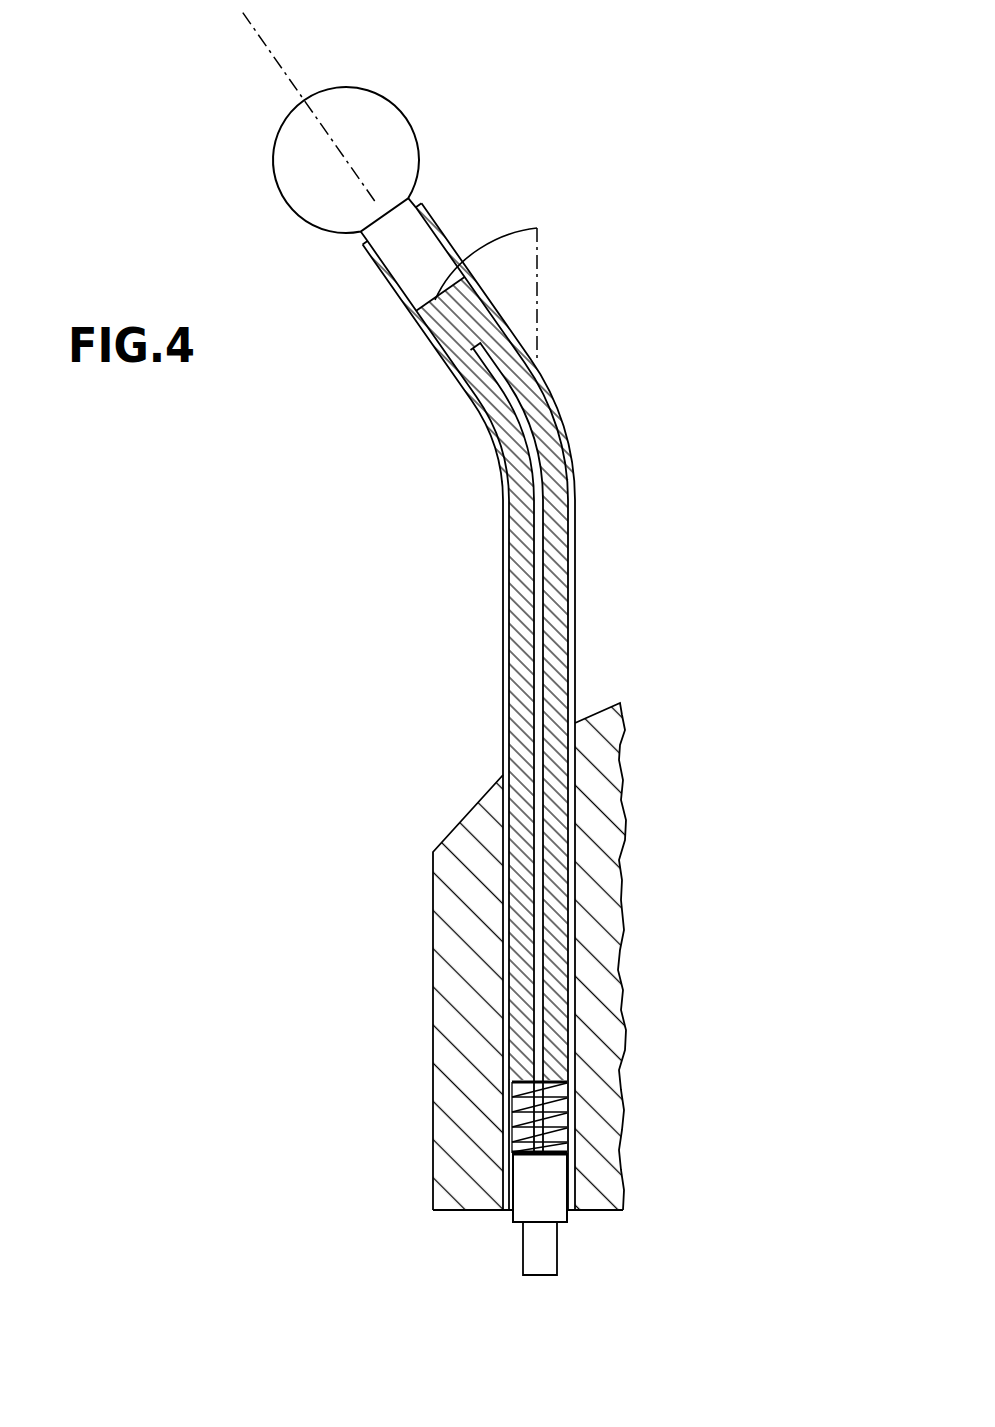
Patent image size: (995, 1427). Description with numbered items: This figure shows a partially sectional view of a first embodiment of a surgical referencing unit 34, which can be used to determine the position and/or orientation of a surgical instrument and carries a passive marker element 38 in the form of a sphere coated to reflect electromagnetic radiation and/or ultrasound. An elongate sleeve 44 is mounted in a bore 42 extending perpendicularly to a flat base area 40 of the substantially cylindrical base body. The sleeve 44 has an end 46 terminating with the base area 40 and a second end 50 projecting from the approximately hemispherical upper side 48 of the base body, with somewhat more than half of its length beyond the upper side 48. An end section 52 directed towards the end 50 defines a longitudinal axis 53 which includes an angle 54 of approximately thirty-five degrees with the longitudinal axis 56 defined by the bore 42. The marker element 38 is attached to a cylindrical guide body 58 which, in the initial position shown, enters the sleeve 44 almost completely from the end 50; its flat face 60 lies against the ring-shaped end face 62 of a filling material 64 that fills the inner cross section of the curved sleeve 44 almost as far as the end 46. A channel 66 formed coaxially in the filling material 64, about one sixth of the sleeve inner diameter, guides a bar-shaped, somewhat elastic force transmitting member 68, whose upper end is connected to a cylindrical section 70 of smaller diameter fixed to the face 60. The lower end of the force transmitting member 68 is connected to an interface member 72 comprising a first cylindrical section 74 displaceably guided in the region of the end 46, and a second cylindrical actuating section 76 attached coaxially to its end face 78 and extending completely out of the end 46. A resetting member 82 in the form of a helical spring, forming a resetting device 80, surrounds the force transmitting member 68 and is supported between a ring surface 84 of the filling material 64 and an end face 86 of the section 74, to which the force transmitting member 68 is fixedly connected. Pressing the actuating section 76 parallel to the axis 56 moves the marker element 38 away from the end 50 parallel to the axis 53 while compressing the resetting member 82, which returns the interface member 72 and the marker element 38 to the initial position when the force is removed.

The referencing unit 34 is at (392, 759).
The marker element 38 is at (362, 117).
The base area 40 is at (597, 1213).
The bore 42 is at (557, 857).
The sleeve 44 is at (568, 595).
The end 46 is at (508, 1216).
The upper side 48 is at (597, 708).
The second end 50 is at (413, 201).
The end section 52 is at (407, 297).
The longitudinal axis 53 is at (282, 43).
The angle 54 is at (497, 237).
The longitudinal axis 56 is at (543, 271).
The guide body 58 is at (402, 247).
The flat face 60 is at (428, 335).
The end face 62 is at (452, 263).
The filling material 64 is at (547, 443).
The channel 66 is at (538, 497).
The force transmitting member 68 is at (540, 547).
The cylindrical section 70 is at (465, 367).
The interface member 72 is at (550, 1180).
The first cylindrical section 74 is at (523, 1183).
The actuating section 76 is at (547, 1247).
The end face 78 is at (562, 1226).
The resetting device 80 is at (438, 1095).
The resetting member 82 is at (512, 1148).
The ring surface 84 is at (553, 1088).
The end face 86 is at (556, 1137).